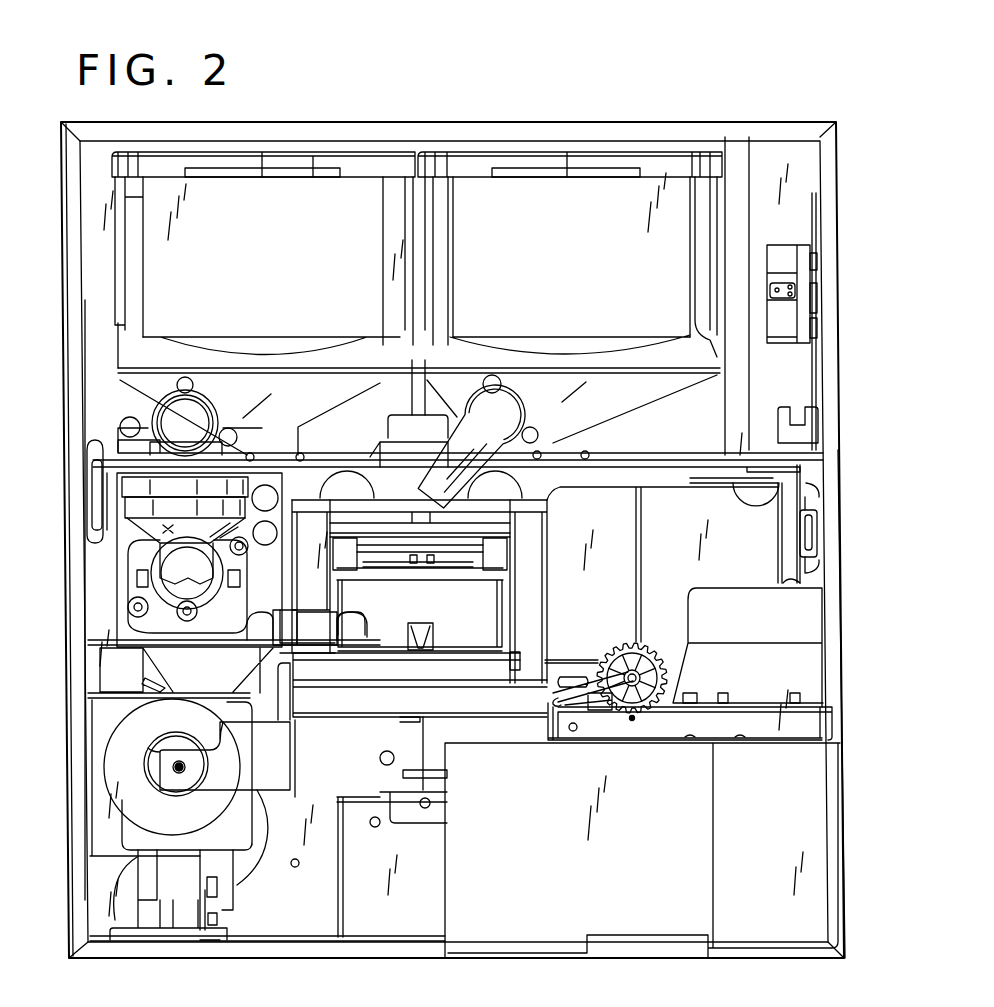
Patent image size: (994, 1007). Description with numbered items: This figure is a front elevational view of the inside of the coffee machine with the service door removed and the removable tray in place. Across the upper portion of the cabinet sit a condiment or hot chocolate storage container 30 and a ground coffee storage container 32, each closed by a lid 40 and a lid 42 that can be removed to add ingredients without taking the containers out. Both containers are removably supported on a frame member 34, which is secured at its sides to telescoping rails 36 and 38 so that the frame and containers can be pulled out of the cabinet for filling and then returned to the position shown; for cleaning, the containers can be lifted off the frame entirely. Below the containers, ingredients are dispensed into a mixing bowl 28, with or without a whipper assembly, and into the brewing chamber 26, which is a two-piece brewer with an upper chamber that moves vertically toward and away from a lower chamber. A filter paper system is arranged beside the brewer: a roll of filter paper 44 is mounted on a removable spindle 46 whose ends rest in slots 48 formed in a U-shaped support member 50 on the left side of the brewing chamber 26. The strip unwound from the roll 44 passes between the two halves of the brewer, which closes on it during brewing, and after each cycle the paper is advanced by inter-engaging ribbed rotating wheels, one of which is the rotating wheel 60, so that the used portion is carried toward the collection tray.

The brewing chamber 26 is at (482, 626).
The mixing bowl 28 is at (173, 527).
The condiment or hot chocolate storage container 30 is at (314, 205).
The ground coffee storage container 32 is at (505, 205).
The frame member 34 is at (767, 493).
The telescoping rail 36 is at (82, 477).
The telescoping rail 38 is at (813, 531).
The lid 40 is at (212, 160).
The lid 42 is at (647, 162).
The roll of filter paper 44 is at (122, 752).
The removable spindle 46 is at (155, 758).
The slots 48 is at (200, 847).
The U-shaped support member 50 is at (267, 770).
The rotating wheel 60 is at (793, 758).